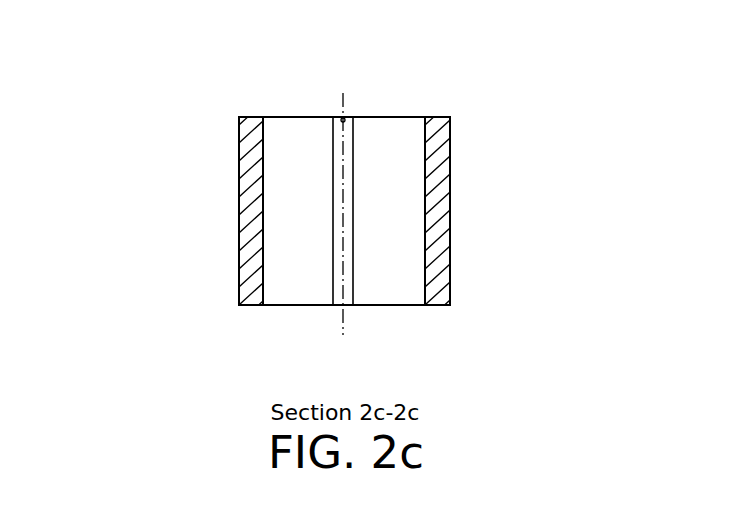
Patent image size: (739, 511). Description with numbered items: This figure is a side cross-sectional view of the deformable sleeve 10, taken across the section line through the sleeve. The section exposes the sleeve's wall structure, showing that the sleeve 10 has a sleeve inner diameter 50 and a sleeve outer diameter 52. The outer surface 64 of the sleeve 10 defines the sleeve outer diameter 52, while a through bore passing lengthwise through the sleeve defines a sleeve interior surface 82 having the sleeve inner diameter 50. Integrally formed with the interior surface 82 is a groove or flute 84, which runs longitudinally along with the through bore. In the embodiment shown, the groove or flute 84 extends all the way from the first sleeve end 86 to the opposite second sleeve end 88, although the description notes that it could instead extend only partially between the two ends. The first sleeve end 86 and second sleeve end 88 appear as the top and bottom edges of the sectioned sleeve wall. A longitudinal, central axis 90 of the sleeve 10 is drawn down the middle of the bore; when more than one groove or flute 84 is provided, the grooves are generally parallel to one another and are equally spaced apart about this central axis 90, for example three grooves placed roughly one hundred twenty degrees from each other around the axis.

The sleeve 10 is at (398, 212).
The sleeve inner diameter 50 is at (263, 218).
The sleeve outer diameter 52 is at (397, 152).
The outer surface 64 is at (238, 192).
The sleeve interior surface 82 is at (298, 238).
The groove or flute 84 is at (381, 93).
The first sleeve end 86 is at (232, 80).
The second sleeve end 88 is at (462, 225).
The longitudinal central axis 90 is at (398, 237).